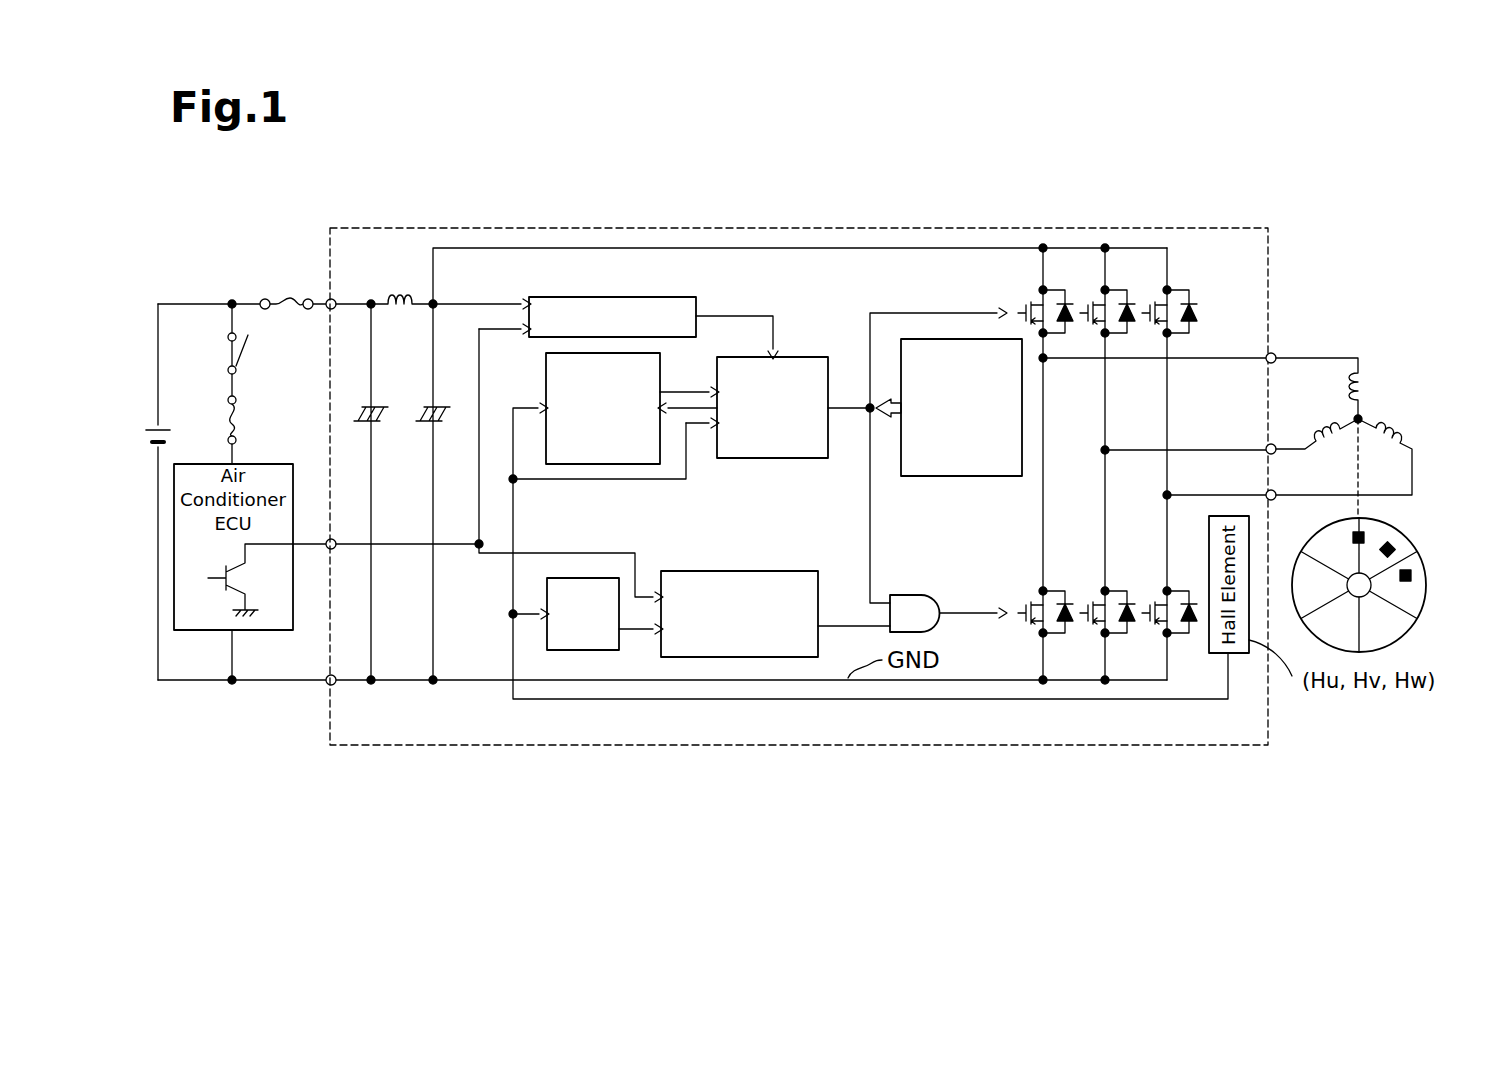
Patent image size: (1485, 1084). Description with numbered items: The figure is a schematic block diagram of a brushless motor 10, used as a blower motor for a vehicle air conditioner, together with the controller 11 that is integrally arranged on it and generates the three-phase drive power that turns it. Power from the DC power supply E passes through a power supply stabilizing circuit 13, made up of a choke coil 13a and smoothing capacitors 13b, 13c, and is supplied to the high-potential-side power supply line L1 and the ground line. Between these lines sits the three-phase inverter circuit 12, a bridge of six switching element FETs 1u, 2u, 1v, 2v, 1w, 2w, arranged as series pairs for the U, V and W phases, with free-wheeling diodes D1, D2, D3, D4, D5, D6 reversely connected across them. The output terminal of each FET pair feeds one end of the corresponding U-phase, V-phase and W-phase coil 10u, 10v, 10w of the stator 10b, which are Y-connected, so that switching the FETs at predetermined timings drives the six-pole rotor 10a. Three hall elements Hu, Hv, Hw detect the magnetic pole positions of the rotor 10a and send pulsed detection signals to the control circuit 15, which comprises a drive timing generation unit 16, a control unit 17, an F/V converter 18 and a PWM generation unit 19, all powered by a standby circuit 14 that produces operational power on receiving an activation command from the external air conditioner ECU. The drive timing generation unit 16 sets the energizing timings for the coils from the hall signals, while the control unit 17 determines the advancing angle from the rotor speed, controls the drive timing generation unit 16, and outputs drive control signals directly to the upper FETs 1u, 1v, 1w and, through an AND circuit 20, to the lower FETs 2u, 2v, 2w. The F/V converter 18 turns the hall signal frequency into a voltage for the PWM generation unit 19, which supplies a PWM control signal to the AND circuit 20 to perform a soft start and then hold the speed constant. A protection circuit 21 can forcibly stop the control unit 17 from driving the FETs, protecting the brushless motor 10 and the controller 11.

The brushless motor 10 is at (1350, 192).
The rotor 10a is at (1300, 562).
The stator 10b is at (1365, 420).
The U-phase coil 10u is at (1372, 388).
The V-phase coil 10v is at (1318, 428).
The W-phase coil 10w is at (1380, 448).
The controller 11 is at (1213, 228).
The three-phase inverter circuit 12 is at (1129, 242).
The power supply stabilizing circuit 13 is at (368, 298).
The choke coil 13a is at (402, 296).
The smoothing capacitor 13b is at (388, 406).
The smoothing capacitor 13c is at (448, 406).
The standby circuit 14 is at (604, 297).
The control circuit 15 is at (806, 350).
The drive timing generation unit 16 is at (546, 372).
The control unit 17 is at (716, 376).
The F/V converter 18 is at (568, 578).
The PWM generation unit 19 is at (765, 571).
The AND circuit 20 is at (903, 595).
The protection circuit 21 is at (962, 476).
The DC power supply E is at (168, 428).
The high-potential-side power supply line L1 is at (803, 248).
The FET 1u is at (1024, 302).
The FET 1v is at (1086, 302).
The FET 1w is at (1148, 302).
The FET 2u is at (1024, 602).
The FET 2v is at (1086, 602).
The FET 2w is at (1148, 602).
The diode D1 is at (1069, 325).
The diode D2 is at (1069, 633).
The diode D3 is at (1131, 325).
The diode D4 is at (1131, 633).
The diode D5 is at (1193, 325).
The diode D6 is at (1193, 633).
The hall element Hu is at (1354, 534).
The hall element Hv is at (1391, 546).
The hall element Hw is at (1410, 572).